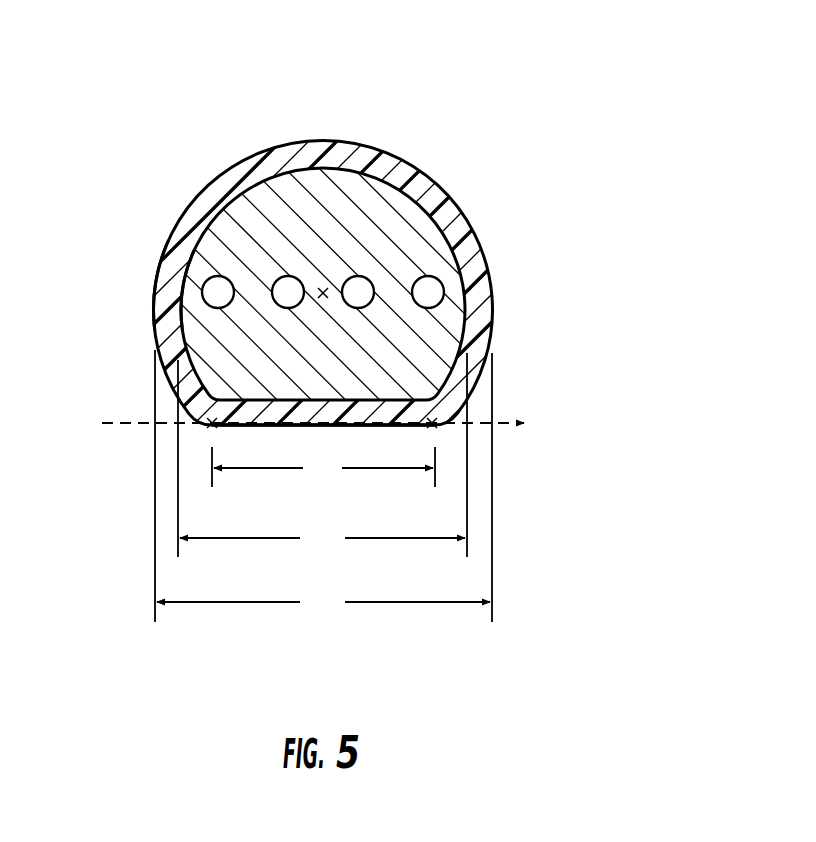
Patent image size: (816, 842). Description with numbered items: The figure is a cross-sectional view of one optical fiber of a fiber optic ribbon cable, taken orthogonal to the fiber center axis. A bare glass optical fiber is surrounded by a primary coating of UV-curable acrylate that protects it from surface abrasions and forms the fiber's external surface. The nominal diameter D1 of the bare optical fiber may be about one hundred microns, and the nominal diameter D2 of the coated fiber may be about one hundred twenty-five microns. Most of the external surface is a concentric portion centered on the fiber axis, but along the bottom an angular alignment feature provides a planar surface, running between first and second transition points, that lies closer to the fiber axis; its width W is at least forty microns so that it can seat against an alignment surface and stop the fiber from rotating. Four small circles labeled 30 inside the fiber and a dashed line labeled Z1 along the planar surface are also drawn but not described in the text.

The optical fibers 30 is at (219, 302).
The axis Z1 is at (331, 427).
The width W is at (323, 468).
The nominal diameter of bare optical fiber D1 is at (322, 459).
The nominal diameter of optical fiber D2 is at (323, 489).